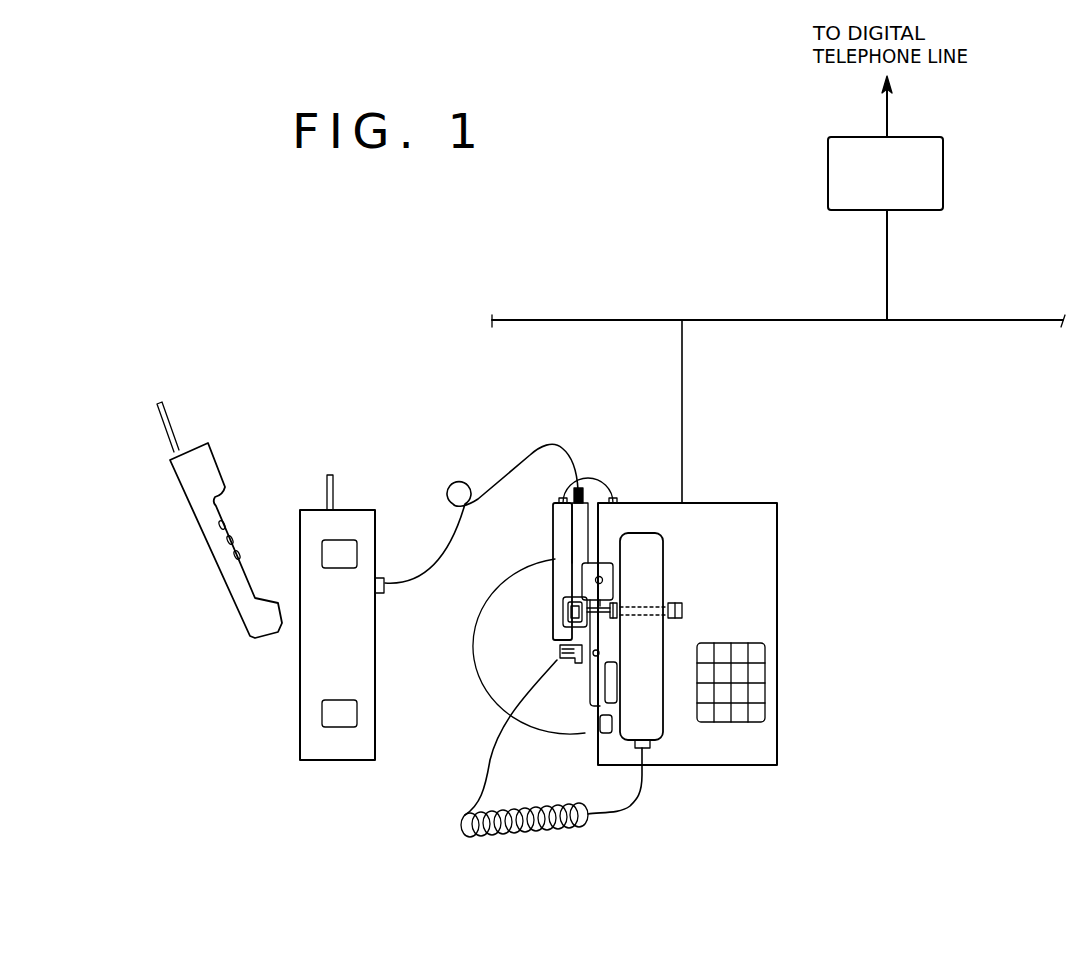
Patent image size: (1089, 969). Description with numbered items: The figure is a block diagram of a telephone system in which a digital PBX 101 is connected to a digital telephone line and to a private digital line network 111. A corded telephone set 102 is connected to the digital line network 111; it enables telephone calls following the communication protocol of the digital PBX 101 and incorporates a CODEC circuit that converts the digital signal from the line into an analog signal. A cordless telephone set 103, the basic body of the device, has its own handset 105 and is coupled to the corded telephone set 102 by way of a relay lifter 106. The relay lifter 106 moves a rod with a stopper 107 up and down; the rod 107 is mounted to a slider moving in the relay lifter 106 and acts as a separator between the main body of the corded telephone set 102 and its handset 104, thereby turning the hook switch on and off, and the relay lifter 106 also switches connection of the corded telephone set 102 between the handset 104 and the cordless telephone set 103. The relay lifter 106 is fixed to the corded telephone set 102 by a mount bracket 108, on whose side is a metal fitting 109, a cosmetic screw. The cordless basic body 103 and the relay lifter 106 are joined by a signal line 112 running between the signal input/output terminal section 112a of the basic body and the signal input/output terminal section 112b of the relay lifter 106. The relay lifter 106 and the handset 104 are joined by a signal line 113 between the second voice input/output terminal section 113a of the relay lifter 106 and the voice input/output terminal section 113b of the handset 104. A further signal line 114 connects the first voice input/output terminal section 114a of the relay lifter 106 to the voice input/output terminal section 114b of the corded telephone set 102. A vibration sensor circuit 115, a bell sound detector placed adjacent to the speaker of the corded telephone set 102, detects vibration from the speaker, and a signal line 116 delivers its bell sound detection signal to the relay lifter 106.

The digital PBX 101 is at (934, 175).
The corded telephone set 102 is at (768, 548).
The cordless telephone set 103 is at (318, 510).
The handset 104 is at (648, 572).
The handset 105 is at (222, 553).
The relay lifter 106 is at (553, 552).
The rod with a stopper 107 is at (682, 608).
The mount bracket 108 is at (594, 681).
The metal fitting 109 is at (557, 660).
The digital line network 111 is at (642, 320).
The signal line 112 is at (513, 470).
The signal input/output terminal section 112a is at (385, 577).
The signal input/output terminal section 112b is at (582, 490).
The signal line 113 is at (632, 808).
The second voice input/output terminal section 113a is at (560, 643).
The voice input/output terminal section 113b is at (652, 752).
The signal line 114 is at (572, 493).
The first voice input/output terminal section 114a is at (558, 500).
The voice input/output terminal section 114b is at (618, 498).
The vibration sensor circuit 115 is at (600, 724).
The signal line 116 is at (460, 661).